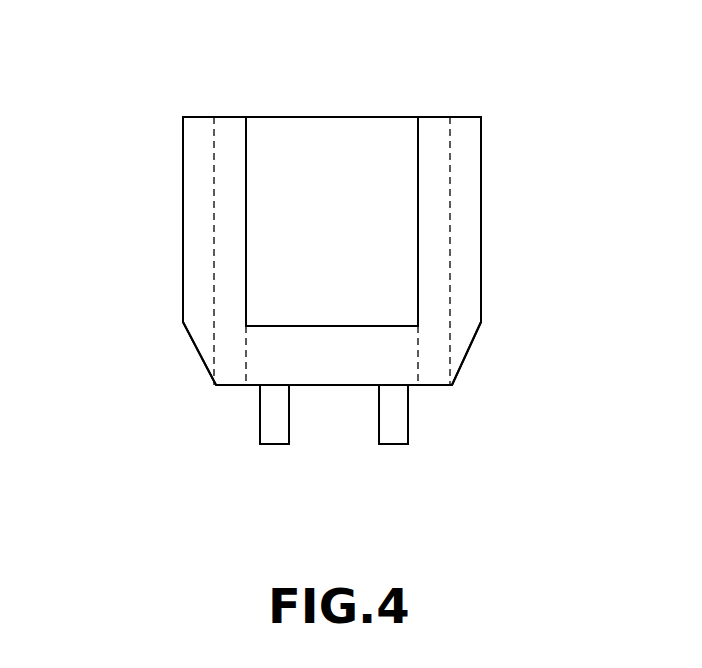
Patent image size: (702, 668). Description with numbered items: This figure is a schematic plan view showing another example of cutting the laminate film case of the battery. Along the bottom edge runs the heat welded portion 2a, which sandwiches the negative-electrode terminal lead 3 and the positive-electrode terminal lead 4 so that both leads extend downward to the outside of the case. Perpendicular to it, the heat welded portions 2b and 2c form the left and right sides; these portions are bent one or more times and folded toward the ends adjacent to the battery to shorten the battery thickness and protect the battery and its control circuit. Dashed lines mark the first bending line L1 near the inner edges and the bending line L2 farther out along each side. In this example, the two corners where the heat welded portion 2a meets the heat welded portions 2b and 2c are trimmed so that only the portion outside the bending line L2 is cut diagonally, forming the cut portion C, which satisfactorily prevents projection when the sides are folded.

The heat welded portion 2a is at (334, 381).
The heat welded portion 2b is at (196, 198).
The heat welded portion 2c is at (470, 203).
The cut portion C is at (200, 352).
The first bending line L1 is at (248, 387).
The bending line L2 is at (214, 116).
The negative-electrode terminal lead 3 is at (394, 435).
The positive-electrode terminal lead 4 is at (275, 435).